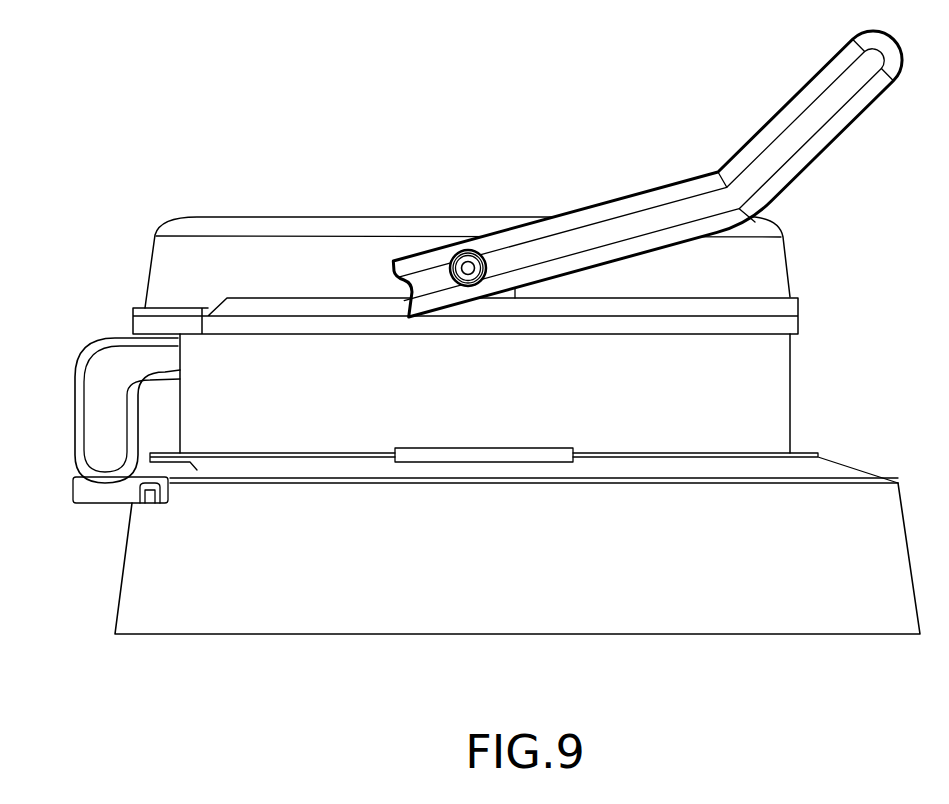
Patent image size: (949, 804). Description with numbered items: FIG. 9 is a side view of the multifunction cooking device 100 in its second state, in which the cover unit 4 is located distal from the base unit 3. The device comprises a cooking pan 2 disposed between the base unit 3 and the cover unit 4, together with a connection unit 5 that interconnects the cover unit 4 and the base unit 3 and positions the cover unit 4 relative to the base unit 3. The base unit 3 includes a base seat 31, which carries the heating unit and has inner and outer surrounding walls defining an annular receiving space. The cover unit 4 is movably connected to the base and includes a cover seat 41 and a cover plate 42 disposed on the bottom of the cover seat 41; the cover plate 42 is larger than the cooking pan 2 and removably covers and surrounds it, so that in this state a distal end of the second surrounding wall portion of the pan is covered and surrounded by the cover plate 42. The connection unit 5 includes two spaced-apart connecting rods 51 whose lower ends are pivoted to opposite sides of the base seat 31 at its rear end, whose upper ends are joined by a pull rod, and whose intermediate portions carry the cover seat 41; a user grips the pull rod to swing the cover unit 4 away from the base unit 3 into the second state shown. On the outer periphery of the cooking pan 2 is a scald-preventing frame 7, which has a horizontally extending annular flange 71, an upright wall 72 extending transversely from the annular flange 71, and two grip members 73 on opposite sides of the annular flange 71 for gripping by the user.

The multifunction cooking device 100 is at (441, 130).
The cooking pan 2 is at (806, 398).
The base unit 3 is at (802, 599).
The base seat 31 is at (707, 572).
The cover unit 4 is at (289, 200).
The cover seat 41 is at (378, 225).
The cover plate 42 is at (783, 327).
The connection unit 5 is at (696, 158).
The connecting rod 51 is at (583, 235).
The scald-preventing frame 7 is at (237, 432).
The annular flange 71 is at (643, 457).
The upright wall 72 is at (313, 433).
The grip member 73 is at (483, 455).